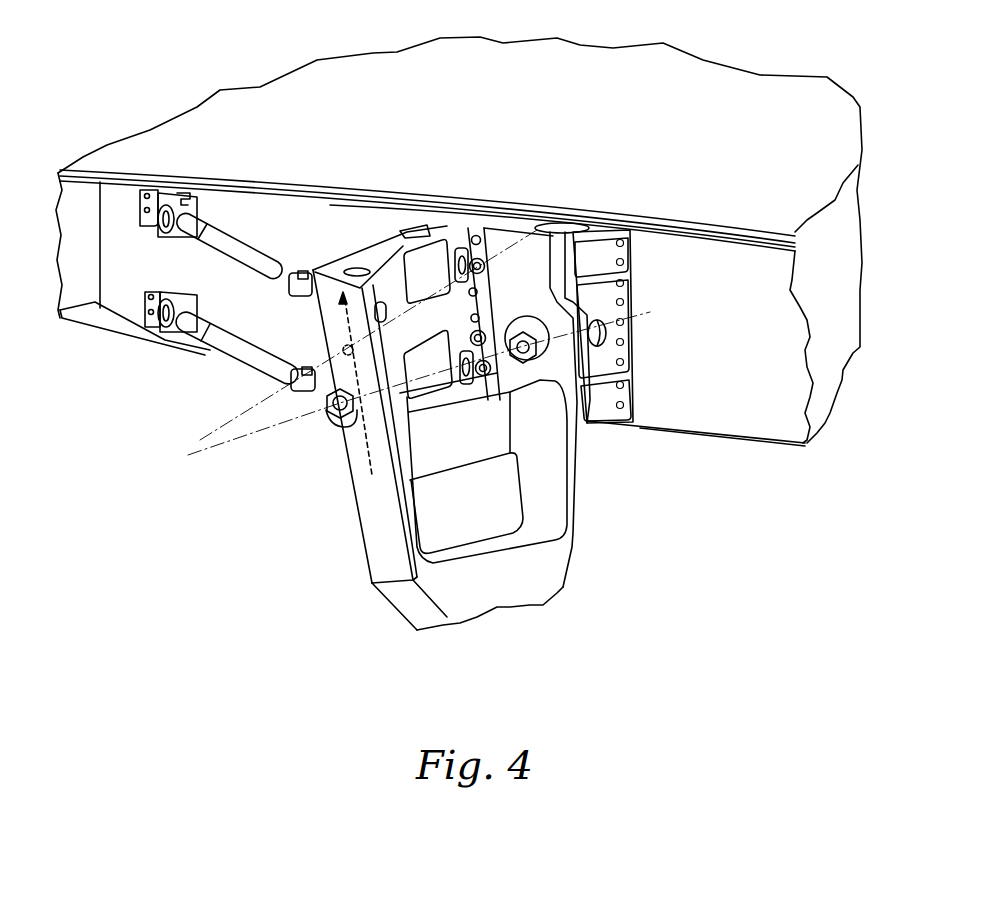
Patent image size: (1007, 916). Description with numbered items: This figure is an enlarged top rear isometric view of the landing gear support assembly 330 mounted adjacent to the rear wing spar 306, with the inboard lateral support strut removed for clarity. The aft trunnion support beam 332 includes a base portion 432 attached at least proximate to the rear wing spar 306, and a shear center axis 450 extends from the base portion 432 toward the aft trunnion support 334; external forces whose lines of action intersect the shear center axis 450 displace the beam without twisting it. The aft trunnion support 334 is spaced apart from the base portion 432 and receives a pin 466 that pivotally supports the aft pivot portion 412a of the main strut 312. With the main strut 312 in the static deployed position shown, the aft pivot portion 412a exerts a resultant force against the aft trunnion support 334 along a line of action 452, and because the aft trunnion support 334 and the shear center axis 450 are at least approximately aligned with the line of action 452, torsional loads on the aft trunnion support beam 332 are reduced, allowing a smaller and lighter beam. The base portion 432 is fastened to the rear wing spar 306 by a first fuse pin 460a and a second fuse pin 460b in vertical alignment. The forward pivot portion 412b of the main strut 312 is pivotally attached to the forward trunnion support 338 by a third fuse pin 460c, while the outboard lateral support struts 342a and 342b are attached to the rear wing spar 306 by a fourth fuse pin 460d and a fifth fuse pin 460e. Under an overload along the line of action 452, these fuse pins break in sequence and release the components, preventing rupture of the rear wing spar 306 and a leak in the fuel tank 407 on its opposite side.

The fuel tank 407 is at (403, 87).
The rear wing spar 306 is at (713, 221).
The landing gear support assembly 330 is at (455, 183).
The aft trunnion support beam 332 is at (352, 267).
The aft trunnion support 334 is at (353, 427).
The forward trunnion support 338 is at (570, 297).
The outboard lateral support strut 342a is at (240, 232).
The outboard lateral support strut 342b is at (228, 347).
The aft pivot portion 412a is at (415, 415).
The forward pivot portion 412b is at (527, 373).
The base portion 432 is at (392, 218).
The shear center axis 450 is at (258, 411).
The line of action 452 is at (310, 326).
The first fuse pin 460a is at (466, 252).
The second fuse pin 460b is at (492, 372).
The third fuse pin 460c is at (583, 357).
The fourth fuse pin 460d is at (140, 295).
The fifth fuse pin 460e is at (145, 193).
The pin 466 is at (333, 420).
The main strut 312 is at (580, 553).